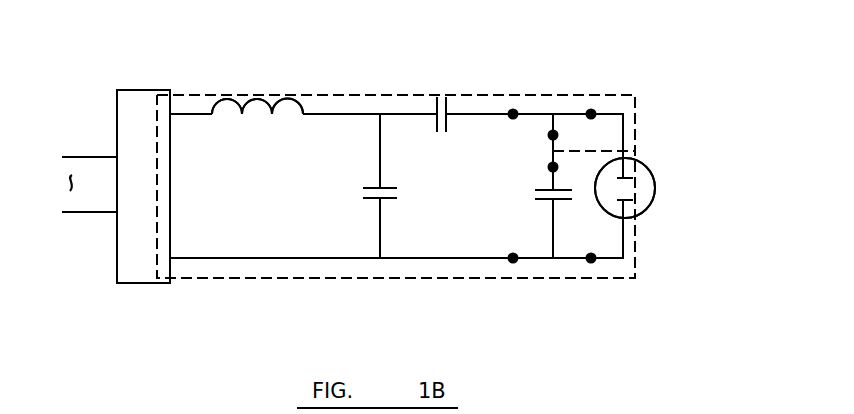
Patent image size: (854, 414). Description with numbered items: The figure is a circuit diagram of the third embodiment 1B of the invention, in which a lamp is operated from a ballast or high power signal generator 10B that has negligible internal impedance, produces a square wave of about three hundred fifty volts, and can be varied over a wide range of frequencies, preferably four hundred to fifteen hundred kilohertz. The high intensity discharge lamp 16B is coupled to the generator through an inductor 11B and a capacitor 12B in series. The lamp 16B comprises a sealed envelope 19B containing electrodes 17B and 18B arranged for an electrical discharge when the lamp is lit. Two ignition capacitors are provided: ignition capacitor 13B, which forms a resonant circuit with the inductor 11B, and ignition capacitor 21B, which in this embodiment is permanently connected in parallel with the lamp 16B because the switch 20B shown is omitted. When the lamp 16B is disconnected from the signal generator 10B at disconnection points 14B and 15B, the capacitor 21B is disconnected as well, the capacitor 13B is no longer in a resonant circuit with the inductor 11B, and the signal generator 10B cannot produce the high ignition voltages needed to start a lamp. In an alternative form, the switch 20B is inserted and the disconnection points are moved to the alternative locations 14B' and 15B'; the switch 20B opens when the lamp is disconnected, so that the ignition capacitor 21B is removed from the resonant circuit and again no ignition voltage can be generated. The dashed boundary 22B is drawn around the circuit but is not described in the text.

The high power signal generator 10B is at (147, 90).
The third embodiment 1B is at (241, 90).
The inductor 11B is at (303, 98).
The capacitor 12B is at (447, 102).
The ignition capacitor 13B is at (363, 193).
The disconnection point 14B is at (513, 114).
The alternative disconnection point 14B' is at (633, 62).
The disconnection point 15B is at (513, 262).
The alternative disconnection point 15B' is at (623, 303).
The lamp 16B is at (660, 197).
The electrode 17B is at (633, 178).
The electrode 18B is at (633, 200).
The sealed envelope 19B is at (653, 180).
The switch 20B is at (553, 151).
The ignition capacitor 21B is at (535, 198).
The shielding enclosure (dashed) 22B is at (300, 278).